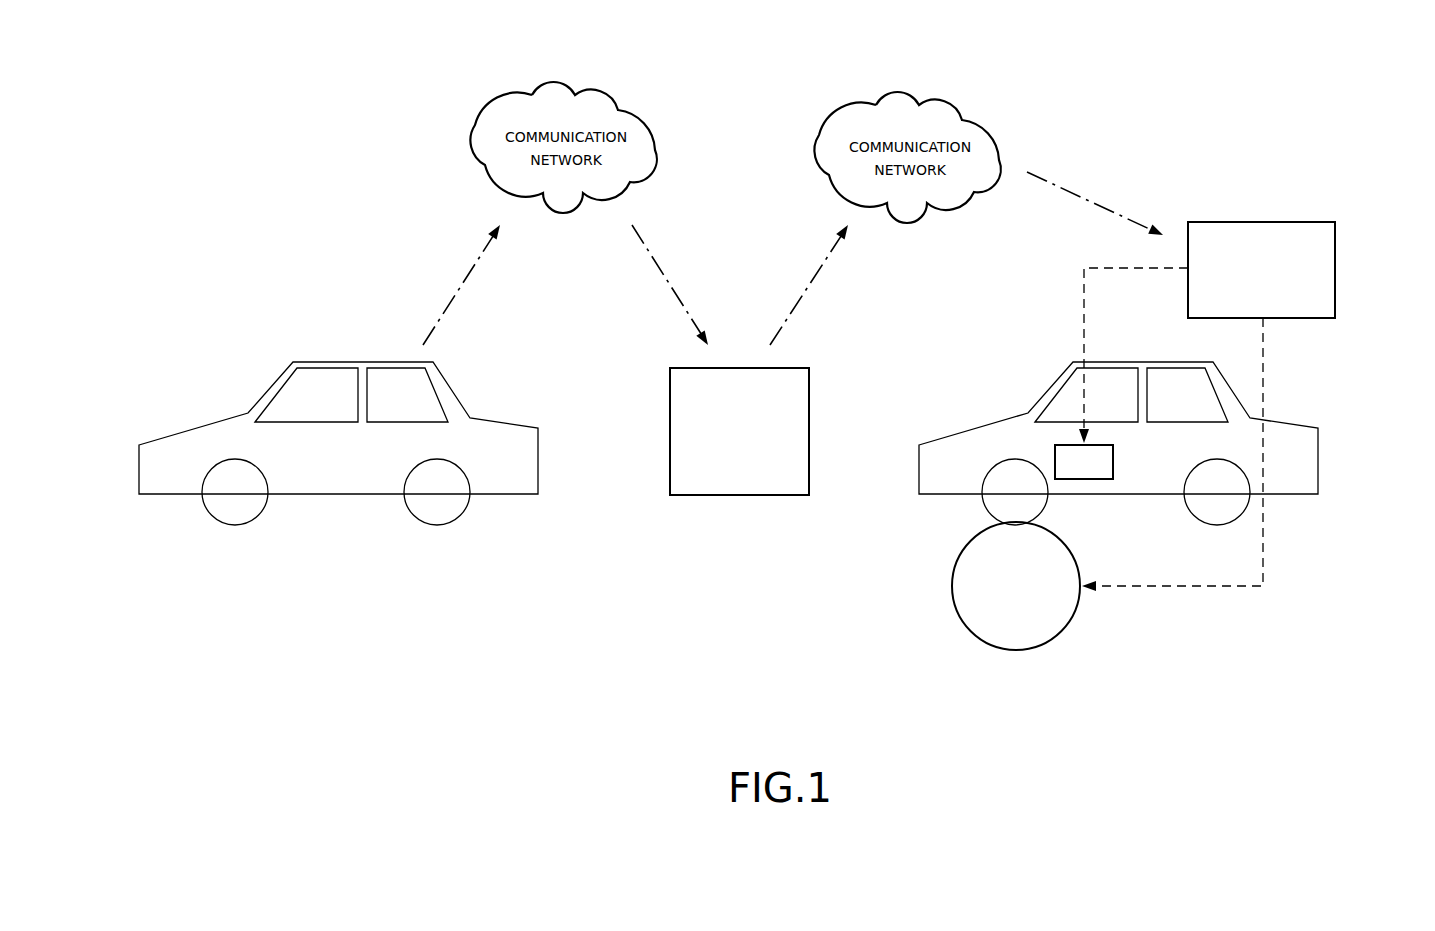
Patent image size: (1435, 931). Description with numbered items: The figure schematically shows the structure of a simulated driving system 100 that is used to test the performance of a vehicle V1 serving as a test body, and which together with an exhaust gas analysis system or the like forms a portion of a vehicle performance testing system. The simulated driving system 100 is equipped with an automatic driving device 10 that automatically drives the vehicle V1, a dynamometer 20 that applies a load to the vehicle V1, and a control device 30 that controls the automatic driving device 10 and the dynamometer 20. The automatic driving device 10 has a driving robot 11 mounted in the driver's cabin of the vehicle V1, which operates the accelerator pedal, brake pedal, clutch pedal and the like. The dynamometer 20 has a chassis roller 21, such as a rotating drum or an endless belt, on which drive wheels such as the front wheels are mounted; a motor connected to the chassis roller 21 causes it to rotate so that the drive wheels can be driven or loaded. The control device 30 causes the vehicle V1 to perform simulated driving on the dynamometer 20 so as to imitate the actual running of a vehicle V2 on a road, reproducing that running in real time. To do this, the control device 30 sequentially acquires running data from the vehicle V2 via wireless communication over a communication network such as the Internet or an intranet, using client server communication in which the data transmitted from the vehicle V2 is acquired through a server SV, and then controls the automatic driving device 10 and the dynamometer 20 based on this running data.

The simulated driving system 100 is at (1308, 180).
The control device 30 is at (1233, 221).
The automatic driving device 10 is at (1111, 504).
The driving robot 11 is at (1117, 462).
The dynamometer 20 is at (967, 624).
The chassis roller 21 is at (1017, 652).
The vehicle V1 is at (972, 423).
The vehicle V2 is at (192, 423).
The server SV is at (738, 497).